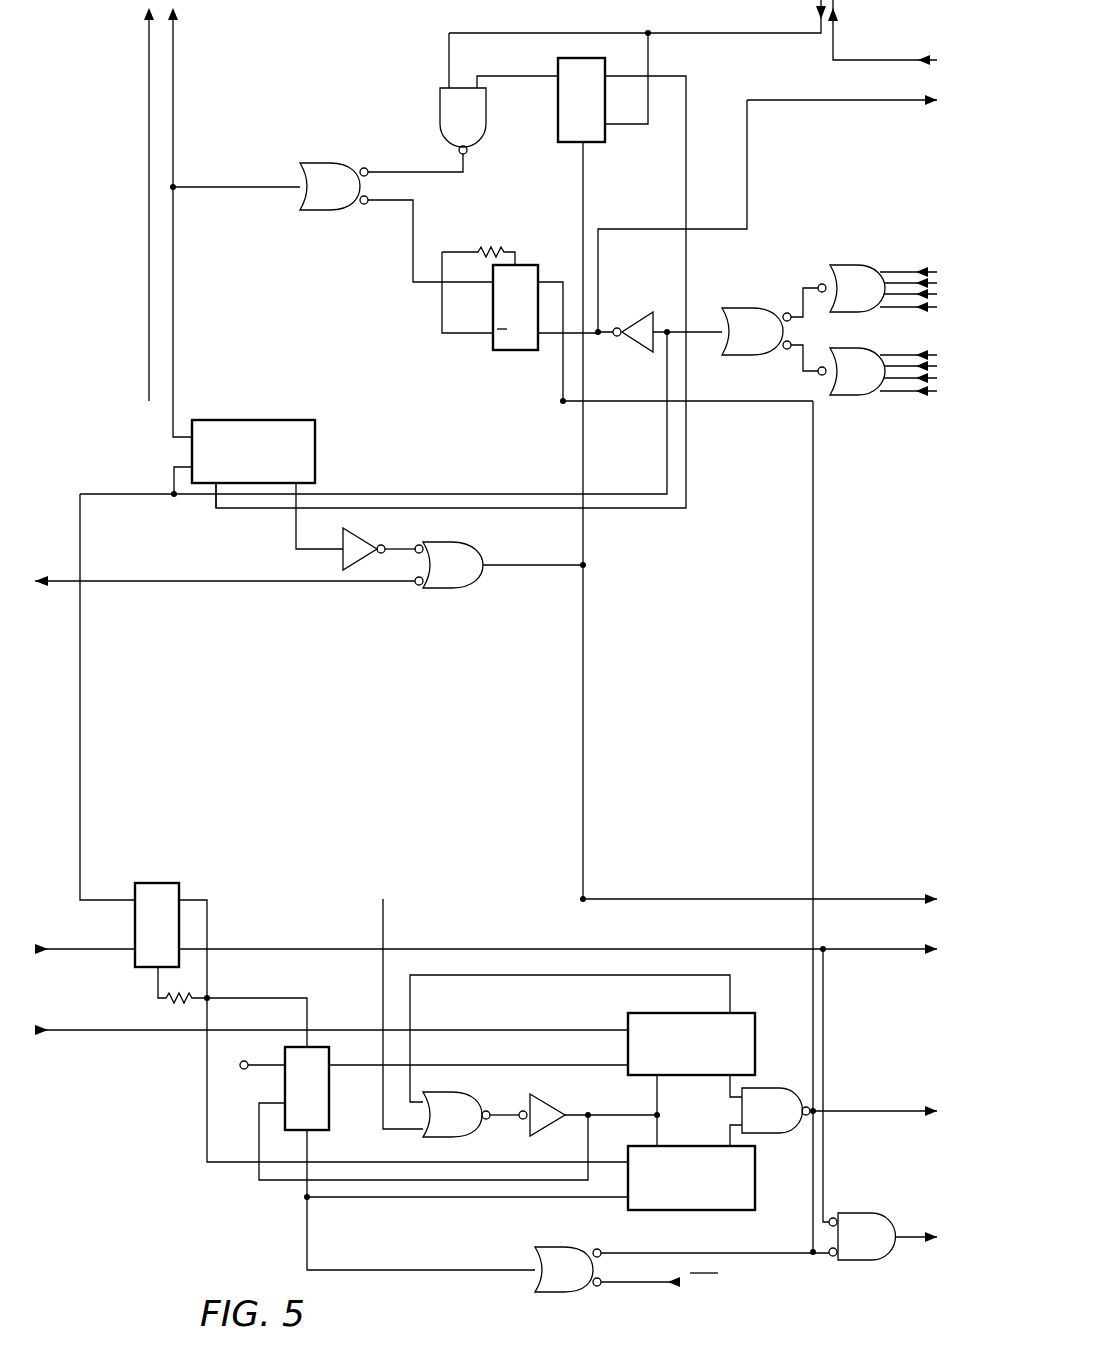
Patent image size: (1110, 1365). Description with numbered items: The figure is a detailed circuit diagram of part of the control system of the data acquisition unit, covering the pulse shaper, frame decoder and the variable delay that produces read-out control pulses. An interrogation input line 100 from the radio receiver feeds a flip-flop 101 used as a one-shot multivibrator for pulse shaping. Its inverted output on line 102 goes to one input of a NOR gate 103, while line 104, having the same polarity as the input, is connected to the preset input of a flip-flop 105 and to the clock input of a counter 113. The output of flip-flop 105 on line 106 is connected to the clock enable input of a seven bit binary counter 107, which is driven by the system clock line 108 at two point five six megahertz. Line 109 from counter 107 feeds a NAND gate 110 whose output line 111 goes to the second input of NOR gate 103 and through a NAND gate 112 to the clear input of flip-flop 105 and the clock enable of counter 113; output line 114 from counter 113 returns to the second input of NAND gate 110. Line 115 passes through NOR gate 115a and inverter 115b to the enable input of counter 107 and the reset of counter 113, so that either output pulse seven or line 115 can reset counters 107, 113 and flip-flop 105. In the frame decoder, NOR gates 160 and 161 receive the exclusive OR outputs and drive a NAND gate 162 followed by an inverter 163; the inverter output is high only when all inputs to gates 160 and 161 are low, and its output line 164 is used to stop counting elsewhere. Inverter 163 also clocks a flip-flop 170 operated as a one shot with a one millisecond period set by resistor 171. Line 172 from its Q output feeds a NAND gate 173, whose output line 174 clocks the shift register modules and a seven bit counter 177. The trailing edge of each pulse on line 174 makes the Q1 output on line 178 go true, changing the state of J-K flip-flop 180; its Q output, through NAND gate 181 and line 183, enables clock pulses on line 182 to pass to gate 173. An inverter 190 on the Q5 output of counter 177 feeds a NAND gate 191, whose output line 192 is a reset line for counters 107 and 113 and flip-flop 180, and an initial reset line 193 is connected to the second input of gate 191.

The interrogation input line 100 is at (83, 950).
The flip-flop 101 is at (135, 934).
The output line 102 is at (210, 955).
The NOR gate 103 is at (848, 1218).
The line 104 is at (208, 968).
The flip-flop 105 is at (330, 1089).
The output line 106 is at (428, 1066).
The seven bit binary counter 107 is at (756, 1052).
The clock line 108 is at (90, 1027).
The line 109 is at (730, 1095).
The NAND gate 110 is at (903, 1112).
The line 111 is at (813, 1181).
The NAND gate 112 is at (556, 1254).
The counter 113 is at (680, 1211).
The output line 114 is at (730, 1135).
The line 115 is at (584, 746).
The NOR gate 115a is at (435, 1138).
The inverter 115b is at (536, 1136).
The NOR gate 160 is at (850, 272).
The NOR gate 161 is at (850, 358).
The NAND gate 162 is at (745, 316).
The inverter 163 is at (622, 322).
The output line 164 is at (747, 178).
The flip-flop 170 is at (493, 310).
The resistor 171 is at (478, 282).
The line 172 is at (413, 215).
The NAND gate 173 is at (315, 170).
The output line 174 is at (225, 192).
The seven bit counter 177 is at (315, 437).
The line 178 is at (222, 512).
The J-K flip-flop 180 is at (558, 124).
The NAND gate 181 is at (436, 118).
The line 182 is at (575, 33).
The line 183 is at (410, 175).
The inverter 190 is at (350, 546).
The NAND gate 191 is at (433, 550).
The output line 192 is at (563, 572).
The initial reset line 193 is at (252, 584).